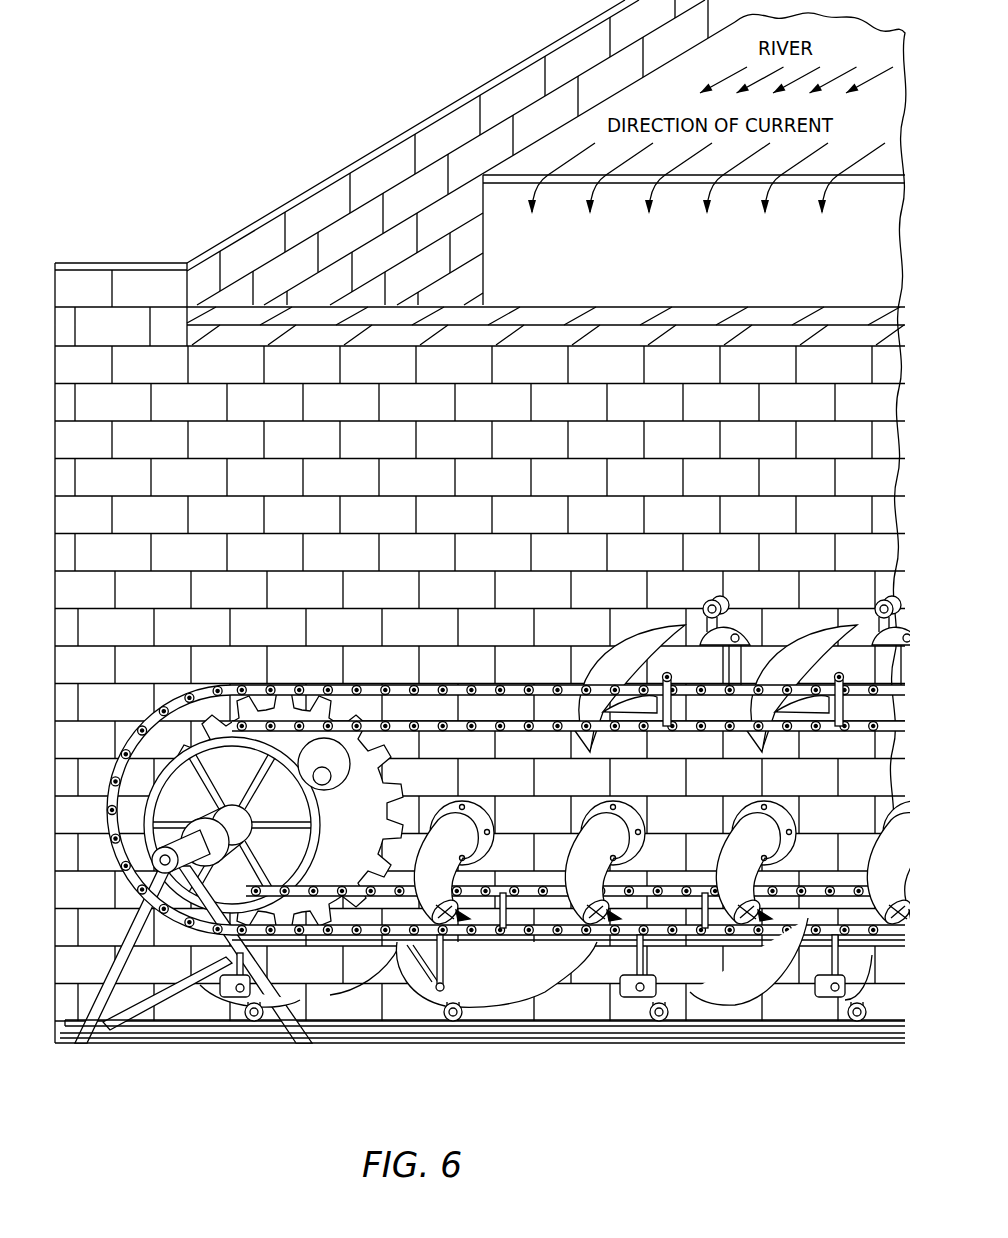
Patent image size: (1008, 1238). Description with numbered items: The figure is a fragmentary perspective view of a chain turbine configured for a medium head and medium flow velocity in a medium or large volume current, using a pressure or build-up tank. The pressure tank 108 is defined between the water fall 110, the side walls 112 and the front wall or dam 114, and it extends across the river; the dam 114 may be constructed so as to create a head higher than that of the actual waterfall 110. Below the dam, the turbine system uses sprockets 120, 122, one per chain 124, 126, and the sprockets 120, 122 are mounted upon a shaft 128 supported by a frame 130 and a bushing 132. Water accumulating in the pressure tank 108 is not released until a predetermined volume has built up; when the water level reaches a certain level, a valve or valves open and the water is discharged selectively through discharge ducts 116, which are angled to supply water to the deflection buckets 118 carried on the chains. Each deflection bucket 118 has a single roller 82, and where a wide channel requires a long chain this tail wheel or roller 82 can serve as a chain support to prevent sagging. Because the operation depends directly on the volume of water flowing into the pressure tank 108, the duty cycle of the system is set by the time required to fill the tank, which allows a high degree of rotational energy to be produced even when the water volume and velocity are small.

The single roller 82 is at (664, 1022).
The pressure tank 108 is at (767, 290).
The water fall 110 is at (868, 184).
The side walls 112 is at (327, 236).
The front wall or dam 114 is at (550, 318).
The discharge ducts 116 is at (465, 840).
The deflection buckets 118 is at (536, 989).
The sprocket 120 is at (183, 740).
The sprocket 122 is at (283, 708).
The chain 124 is at (452, 722).
The chain 126 is at (554, 665).
The shaft 128 is at (160, 868).
The frame 130 is at (115, 962).
The bushing 132 is at (168, 833).